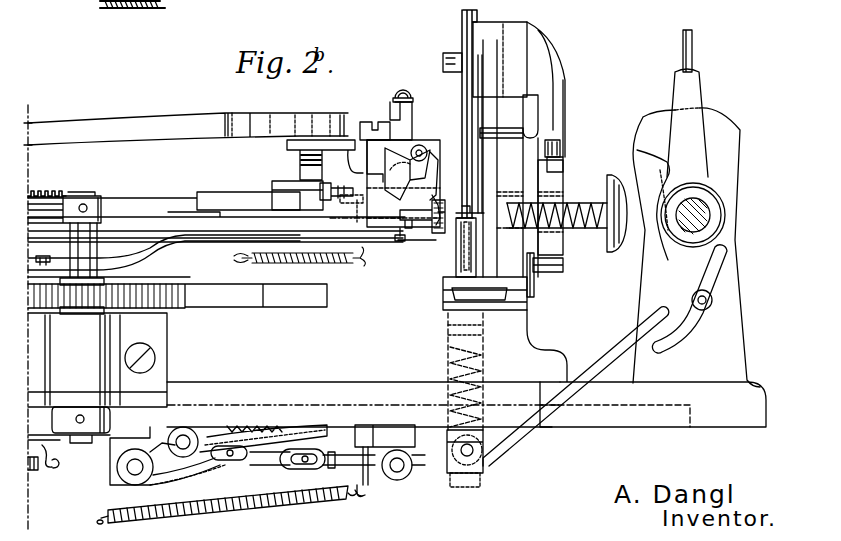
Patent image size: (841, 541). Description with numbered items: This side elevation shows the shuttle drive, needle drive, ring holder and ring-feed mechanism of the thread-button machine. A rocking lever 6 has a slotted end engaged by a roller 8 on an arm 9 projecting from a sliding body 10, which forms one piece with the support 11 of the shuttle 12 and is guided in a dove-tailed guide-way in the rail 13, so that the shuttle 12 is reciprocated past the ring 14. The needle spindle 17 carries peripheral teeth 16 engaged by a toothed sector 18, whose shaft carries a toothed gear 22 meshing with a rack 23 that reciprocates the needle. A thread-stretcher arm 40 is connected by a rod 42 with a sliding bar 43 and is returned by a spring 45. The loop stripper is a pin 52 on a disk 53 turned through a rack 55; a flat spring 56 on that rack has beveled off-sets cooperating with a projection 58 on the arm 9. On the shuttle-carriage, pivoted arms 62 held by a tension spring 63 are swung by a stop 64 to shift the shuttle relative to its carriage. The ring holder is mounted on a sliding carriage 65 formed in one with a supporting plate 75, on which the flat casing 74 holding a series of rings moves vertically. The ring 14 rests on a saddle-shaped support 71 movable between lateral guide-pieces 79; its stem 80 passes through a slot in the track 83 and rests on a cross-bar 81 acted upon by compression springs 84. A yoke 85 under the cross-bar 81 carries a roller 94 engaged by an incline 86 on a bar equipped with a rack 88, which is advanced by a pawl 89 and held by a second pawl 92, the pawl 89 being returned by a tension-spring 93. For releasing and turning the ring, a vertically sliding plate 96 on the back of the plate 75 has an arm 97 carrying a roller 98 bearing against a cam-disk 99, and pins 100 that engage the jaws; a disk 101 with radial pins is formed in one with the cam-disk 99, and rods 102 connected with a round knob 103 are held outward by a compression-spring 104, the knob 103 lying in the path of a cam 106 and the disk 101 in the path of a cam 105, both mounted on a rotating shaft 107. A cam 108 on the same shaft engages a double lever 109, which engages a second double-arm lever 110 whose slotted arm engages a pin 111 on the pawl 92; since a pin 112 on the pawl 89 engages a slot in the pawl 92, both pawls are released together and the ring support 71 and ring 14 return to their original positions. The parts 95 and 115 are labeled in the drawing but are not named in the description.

The rocking lever 6 is at (140, 131).
The roller 8 is at (336, 115).
The arm 9 is at (313, 144).
The sliding body 10 is at (370, 155).
The shuttle support 11 is at (425, 146).
The shuttle 12 is at (434, 190).
The rail 13 is at (370, 140).
The ring 14 is at (476, 218).
The peripheral teeth 16 is at (40, 196).
The needle spindle 17 is at (142, 207).
The toothed sector 18 is at (47, 212).
The toothed gear 22 is at (82, 302).
The rack 23 is at (188, 304).
The thread-stretcher arm 40 is at (440, 210).
The rod 42 is at (182, 244).
The sliding bar 43 is at (44, 256).
The spring 45 is at (299, 266).
The stripper pin 52 is at (358, 212).
The disk 53 is at (326, 202).
The rack 55 is at (272, 187).
The flat spring 56 is at (299, 163).
The projection 58 is at (283, 125).
The arm 62 is at (412, 116).
The tension spring 63 is at (404, 88).
The stop 64 is at (395, 114).
The sliding carriage 65 is at (536, 290).
The saddle-shaped support 71 is at (453, 252).
The flat casing 74 is at (462, 24).
The supporting plate 75 is at (508, 28).
The lateral guide-pieces 79 is at (460, 238).
The stem 80 is at (445, 291).
The cross-bar 81 is at (483, 335).
The track 83 is at (522, 304).
The compression springs 84 is at (483, 368).
The yoke 85 is at (450, 478).
The incline 86 is at (368, 425).
The rack 88 is at (270, 430).
The pawl 89 is at (198, 440).
The pawl 92 is at (143, 2).
The tension-spring 93 is at (42, 470).
The roller 94 is at (474, 478).
The rod 95 is at (492, 160).
The vertically sliding plate 96 is at (540, 105).
The arm 97 is at (548, 40).
The roller 98 is at (562, 146).
The cam-disk 99 is at (563, 266).
The pins 100 is at (523, 130).
The disk 101 is at (565, 164).
The rods 102 is at (568, 196).
The round knob 103 is at (610, 182).
The compression-spring 104 is at (588, 230).
The cam 105 is at (692, 58).
The cam 106 is at (728, 132).
The rotating shaft 107 is at (678, 228).
The cam 108 is at (638, 160).
The double lever 109 is at (710, 274).
The double-arm lever 110 is at (340, 498).
The pin 111 is at (232, 456).
The pin 112 is at (198, 2).
The hook 115 is at (365, 505).